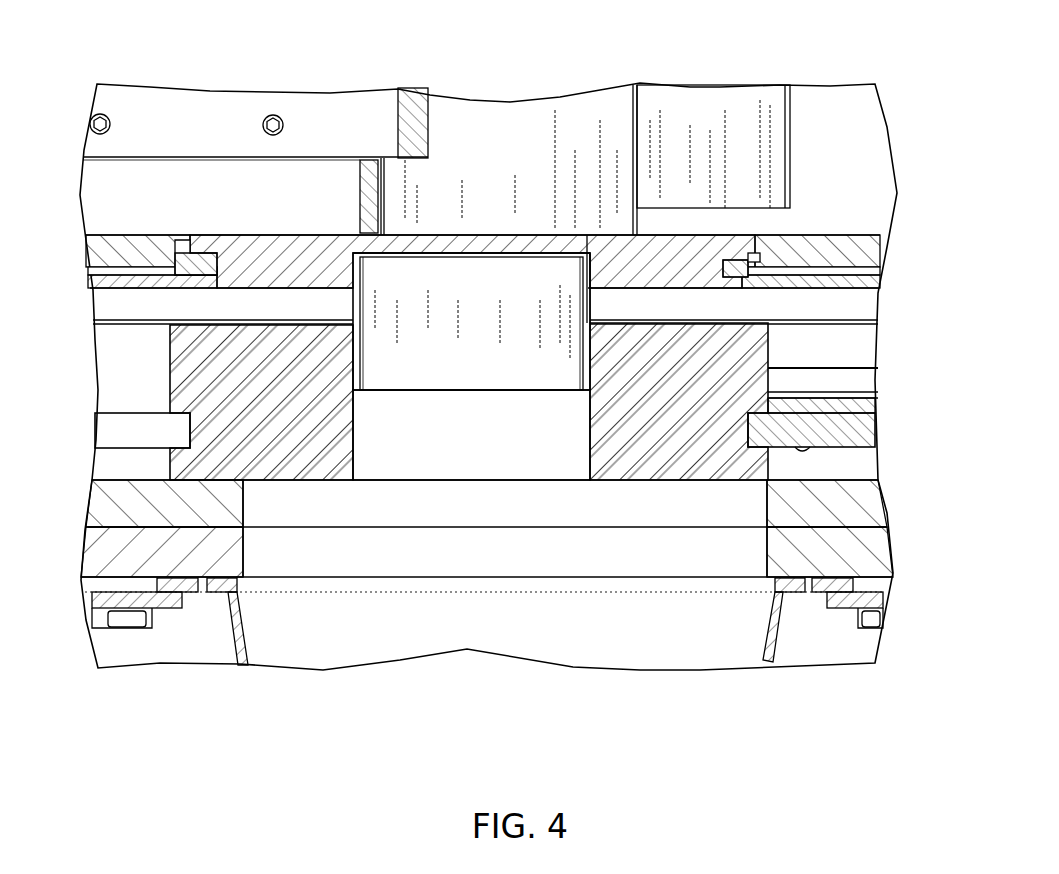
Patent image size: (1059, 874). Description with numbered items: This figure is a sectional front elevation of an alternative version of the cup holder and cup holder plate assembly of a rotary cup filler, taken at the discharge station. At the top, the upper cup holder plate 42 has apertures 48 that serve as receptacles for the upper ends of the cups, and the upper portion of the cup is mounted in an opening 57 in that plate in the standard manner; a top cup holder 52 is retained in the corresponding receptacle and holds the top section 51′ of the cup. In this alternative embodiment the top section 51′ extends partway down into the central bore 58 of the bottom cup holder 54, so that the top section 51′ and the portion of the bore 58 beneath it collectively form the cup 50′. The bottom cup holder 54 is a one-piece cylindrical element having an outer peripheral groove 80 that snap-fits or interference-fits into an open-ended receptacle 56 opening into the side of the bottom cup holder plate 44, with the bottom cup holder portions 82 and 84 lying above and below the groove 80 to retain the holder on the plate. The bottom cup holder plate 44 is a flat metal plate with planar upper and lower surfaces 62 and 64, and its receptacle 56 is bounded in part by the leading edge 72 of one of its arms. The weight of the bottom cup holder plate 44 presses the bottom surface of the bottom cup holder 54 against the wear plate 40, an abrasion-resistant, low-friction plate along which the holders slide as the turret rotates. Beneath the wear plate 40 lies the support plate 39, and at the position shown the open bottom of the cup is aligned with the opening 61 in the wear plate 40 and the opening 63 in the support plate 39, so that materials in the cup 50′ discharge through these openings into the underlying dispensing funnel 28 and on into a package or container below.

The dispensing funnel 28 is at (780, 640).
The support plate 39 is at (880, 574).
The wear plate 40 is at (853, 513).
The upper cup holder plate 42 is at (850, 253).
The bottom cup holder plate 44 is at (835, 434).
The aperture 48 is at (393, 233).
The cup 50′ is at (598, 294).
The top section 51′ is at (473, 290).
The top cup holder 52 is at (762, 224).
The bottom cup holder 54 is at (781, 364).
The receptacle 56 is at (760, 434).
The opening 57 is at (195, 251).
The central bore 58 is at (352, 428).
The opening 61 is at (244, 498).
The upper surface 62 is at (863, 403).
The opening 63 is at (767, 545).
The lower surface 64 is at (802, 447).
The leading edge 72 is at (114, 437).
The groove 80 is at (170, 442).
The bottom cup holder portion 82 is at (170, 378).
The bottom cup holder portion 84 is at (187, 476).